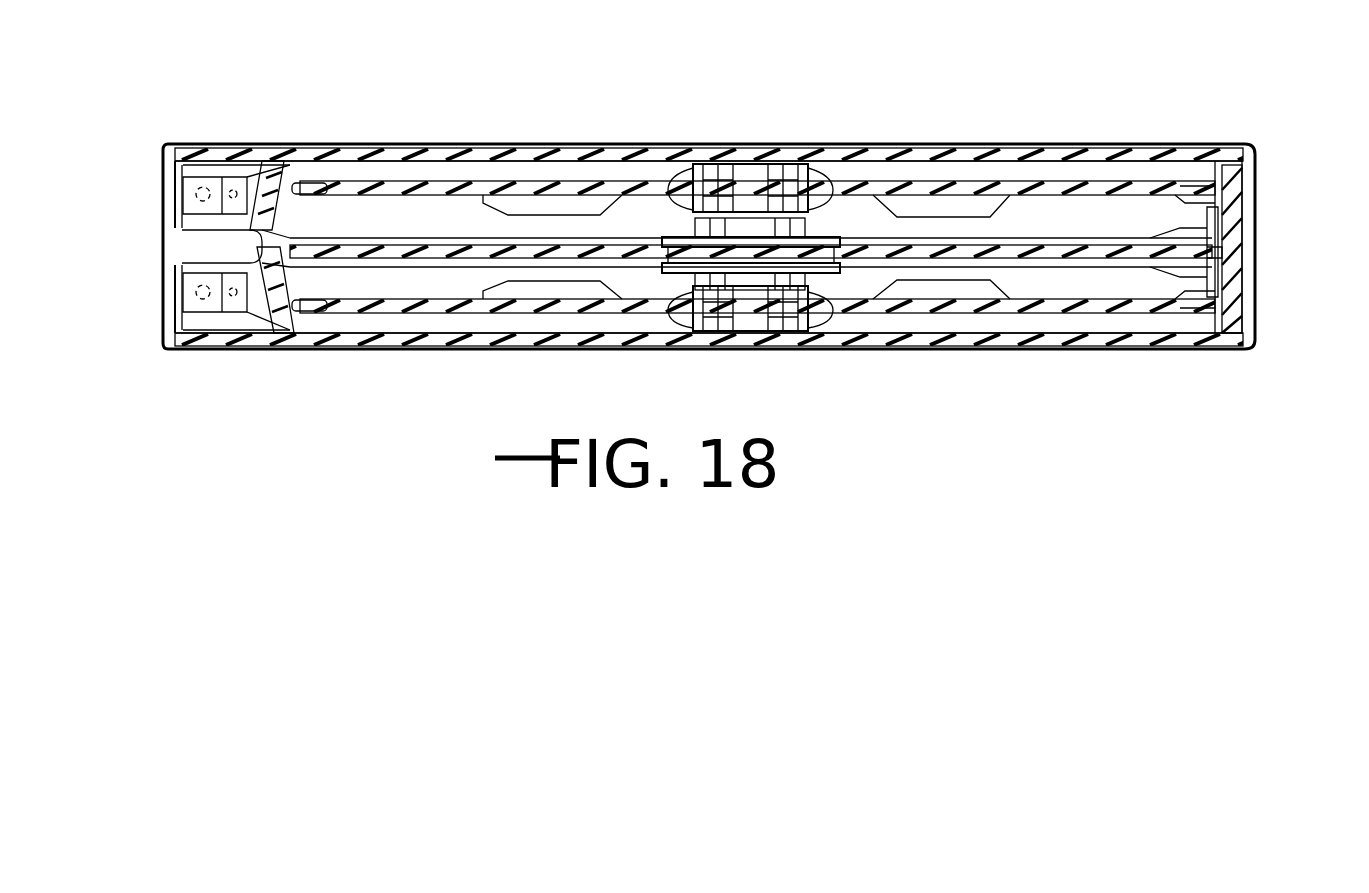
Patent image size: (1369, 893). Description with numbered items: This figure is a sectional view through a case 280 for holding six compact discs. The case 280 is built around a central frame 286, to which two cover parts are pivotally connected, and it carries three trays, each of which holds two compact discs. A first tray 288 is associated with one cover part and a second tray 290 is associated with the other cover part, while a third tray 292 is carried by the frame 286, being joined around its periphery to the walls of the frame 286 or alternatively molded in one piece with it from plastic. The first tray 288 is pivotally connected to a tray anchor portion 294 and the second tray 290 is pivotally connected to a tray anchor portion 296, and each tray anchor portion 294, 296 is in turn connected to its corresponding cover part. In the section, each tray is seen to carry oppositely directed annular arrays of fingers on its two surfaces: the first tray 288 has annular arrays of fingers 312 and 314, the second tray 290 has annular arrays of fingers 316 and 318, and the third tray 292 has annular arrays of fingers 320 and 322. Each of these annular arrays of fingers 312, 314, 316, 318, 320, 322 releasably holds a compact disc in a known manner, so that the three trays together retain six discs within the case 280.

The case 280 is at (437, 80).
The central frame 286 is at (165, 243).
The first tray 288 is at (1073, 310).
The second tray 290 is at (1058, 183).
The third tray 292 is at (1150, 232).
The tray anchor portion 294 is at (268, 325).
The tray anchor portion 296 is at (262, 225).
The annular array of fingers 312 is at (700, 306).
The annular array of fingers 314 is at (678, 290).
The annular array of fingers 316 is at (813, 282).
The annular array of fingers 318 is at (813, 227).
The annular array of fingers 320 is at (643, 200).
The annular array of fingers 322 is at (667, 205).